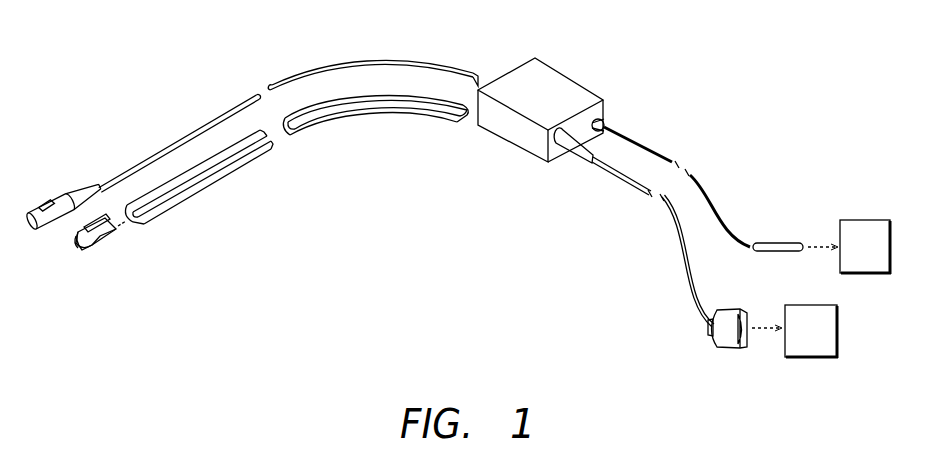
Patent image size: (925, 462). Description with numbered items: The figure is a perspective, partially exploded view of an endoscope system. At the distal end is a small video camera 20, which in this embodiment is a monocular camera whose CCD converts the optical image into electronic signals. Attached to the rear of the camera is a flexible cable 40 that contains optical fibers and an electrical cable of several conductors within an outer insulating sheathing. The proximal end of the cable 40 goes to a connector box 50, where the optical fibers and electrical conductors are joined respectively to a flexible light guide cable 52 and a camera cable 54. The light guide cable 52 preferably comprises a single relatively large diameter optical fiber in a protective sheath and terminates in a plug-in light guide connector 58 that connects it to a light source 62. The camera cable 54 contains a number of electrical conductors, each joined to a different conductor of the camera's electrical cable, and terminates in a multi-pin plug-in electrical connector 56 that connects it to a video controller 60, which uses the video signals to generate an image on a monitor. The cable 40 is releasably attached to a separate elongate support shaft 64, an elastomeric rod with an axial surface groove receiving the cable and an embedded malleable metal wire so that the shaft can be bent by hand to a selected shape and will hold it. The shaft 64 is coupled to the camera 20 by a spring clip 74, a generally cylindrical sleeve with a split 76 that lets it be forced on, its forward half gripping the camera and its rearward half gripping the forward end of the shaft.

The video camera 20 is at (78, 184).
The flexible cable 40 is at (228, 107).
The connector box 50 is at (567, 67).
The light guide cable 52 is at (673, 152).
The camera cable 54 is at (672, 217).
The electrical connector 56 is at (728, 306).
The light guide connector 58 is at (773, 243).
The video controller 60 is at (823, 339).
The light source 62 is at (880, 258).
The support shaft 64 is at (239, 174).
The spring clip 74 is at (107, 249).
The split 76 is at (75, 248).